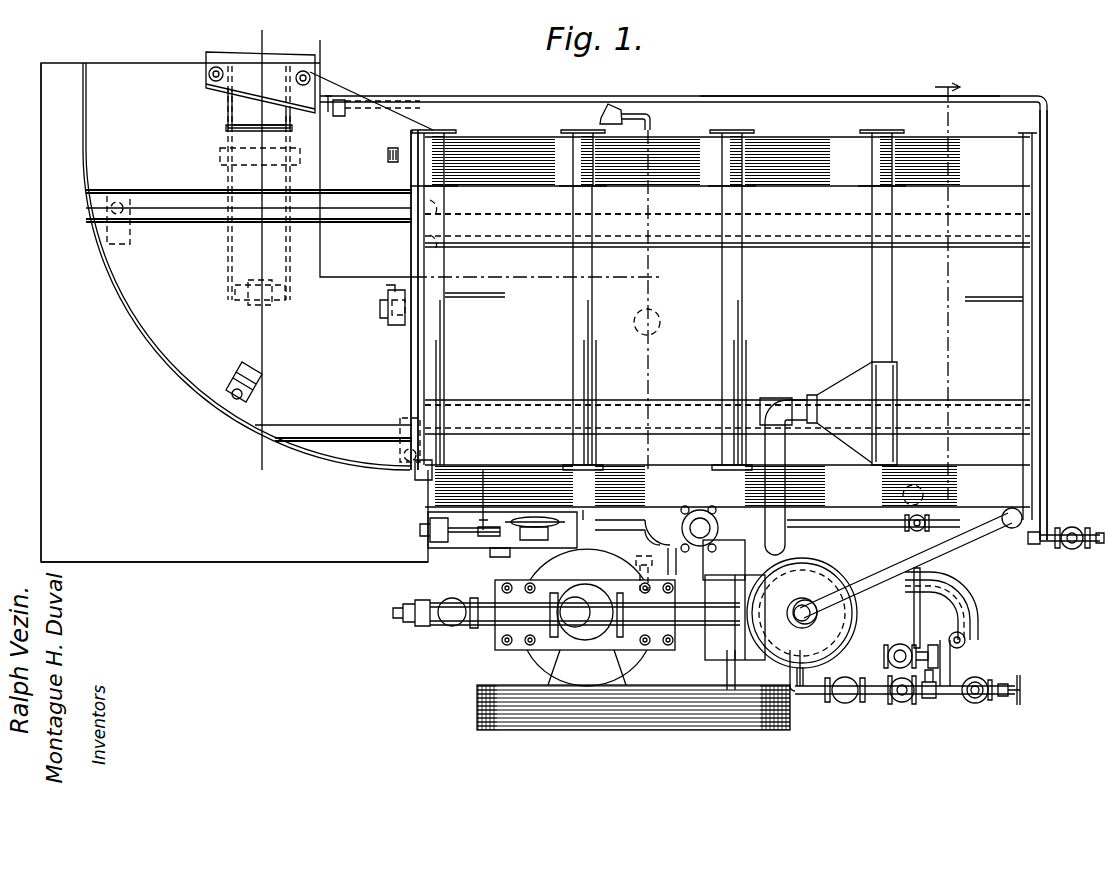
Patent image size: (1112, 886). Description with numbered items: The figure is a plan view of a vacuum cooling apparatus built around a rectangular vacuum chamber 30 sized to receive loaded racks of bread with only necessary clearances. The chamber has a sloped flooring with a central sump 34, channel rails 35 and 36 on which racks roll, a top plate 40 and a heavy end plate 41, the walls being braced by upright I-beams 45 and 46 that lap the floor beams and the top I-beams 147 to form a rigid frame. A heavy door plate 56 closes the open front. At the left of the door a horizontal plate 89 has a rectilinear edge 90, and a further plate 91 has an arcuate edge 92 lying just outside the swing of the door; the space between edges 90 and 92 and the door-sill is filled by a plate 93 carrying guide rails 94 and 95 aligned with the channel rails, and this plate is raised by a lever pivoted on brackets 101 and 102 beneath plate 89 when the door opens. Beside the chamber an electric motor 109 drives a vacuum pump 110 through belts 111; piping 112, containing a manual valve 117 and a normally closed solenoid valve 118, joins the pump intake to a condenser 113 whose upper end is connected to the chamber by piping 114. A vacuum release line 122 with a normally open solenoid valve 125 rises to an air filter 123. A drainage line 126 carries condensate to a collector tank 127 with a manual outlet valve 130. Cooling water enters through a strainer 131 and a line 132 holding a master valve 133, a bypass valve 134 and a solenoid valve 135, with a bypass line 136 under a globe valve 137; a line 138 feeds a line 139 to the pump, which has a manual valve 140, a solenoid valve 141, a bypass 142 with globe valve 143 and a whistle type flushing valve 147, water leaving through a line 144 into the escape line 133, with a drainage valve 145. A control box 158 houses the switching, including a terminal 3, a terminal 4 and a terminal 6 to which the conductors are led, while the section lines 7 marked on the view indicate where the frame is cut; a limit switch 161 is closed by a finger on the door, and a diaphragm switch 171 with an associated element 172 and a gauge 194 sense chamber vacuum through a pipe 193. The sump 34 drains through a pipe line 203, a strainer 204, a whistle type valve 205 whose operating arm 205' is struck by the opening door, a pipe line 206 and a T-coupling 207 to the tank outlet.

The terminal 3 is at (947, 284).
The terminal 4 is at (252, 31).
The terminal 6 is at (396, 339).
The section line 7-7 / pivot plate 7 is at (319, 148).
The vacuum chamber 30 is at (967, 130).
The sump 34 is at (662, 320).
The channel rail 35 is at (519, 216).
The channel rail 36 is at (496, 416).
The top plate 40 is at (1008, 275).
The end plate 41 is at (1048, 410).
The upright I-beam 45 is at (580, 156).
The upright I-beam 46 is at (582, 484).
The door plate 56 is at (418, 373).
The horizontal plate 89 is at (128, 70).
The rectilinear edge 90 is at (137, 190).
The plate 91 is at (243, 562).
The arcuate edge 92 is at (220, 416).
The plate 93 is at (160, 325).
The guide rail 94 is at (207, 212).
The guide rail 95 is at (326, 426).
The bracket 101 is at (228, 179).
The bracket 102 is at (302, 176).
The electric motor 109 is at (718, 643).
The vacuum pump 110 is at (540, 658).
The belts 111 is at (655, 720).
The piping 112 is at (458, 622).
The condenser 113 is at (768, 604).
The piping 114 is at (972, 578).
The manually operable control valve 117 is at (412, 622).
The solenoid operated control valve 118 is at (594, 638).
The vacuum release tubing line 122 is at (783, 446).
The air filter 123 is at (852, 380).
The solenoid operated control valve 125 is at (710, 566).
The drainage line 126 is at (980, 599).
The condensate collector tank 127 is at (975, 520).
The manually operable valve 130 is at (1070, 534).
The strainer 131 is at (979, 705).
The tubing line 132 is at (950, 687).
The escape line 133 is at (1020, 680).
The bypass control valve 134 is at (904, 705).
The solenoid operated control valve 135 is at (847, 704).
The bypass line 136 is at (940, 655).
The globe valve 137 is at (892, 657).
The line 138 is at (903, 538).
The line 139 is at (831, 520).
The manually operable valve 140 is at (688, 511).
The solenoid operated valve 141 is at (622, 526).
The bypass 142 is at (640, 560).
The globe valve 143 is at (673, 556).
The line 144 is at (727, 700).
The drainage valve 145 is at (913, 486).
The whistle type valve 147 is at (592, 352).
The control box 158 is at (447, 549).
The limit switch 161 is at (415, 483).
The diaphragm switch 171 is at (542, 540).
The block 172 is at (492, 549).
The pipe 193 is at (486, 500).
The gauge 194 is at (427, 529).
The pipe line 203 is at (525, 96).
The strainer 204 is at (618, 104).
The whistle type valve 205 is at (372, 91).
The operating arm 205' is at (369, 140).
The pipe line 206 is at (722, 96).
The T-coupling 207 is at (1073, 549).